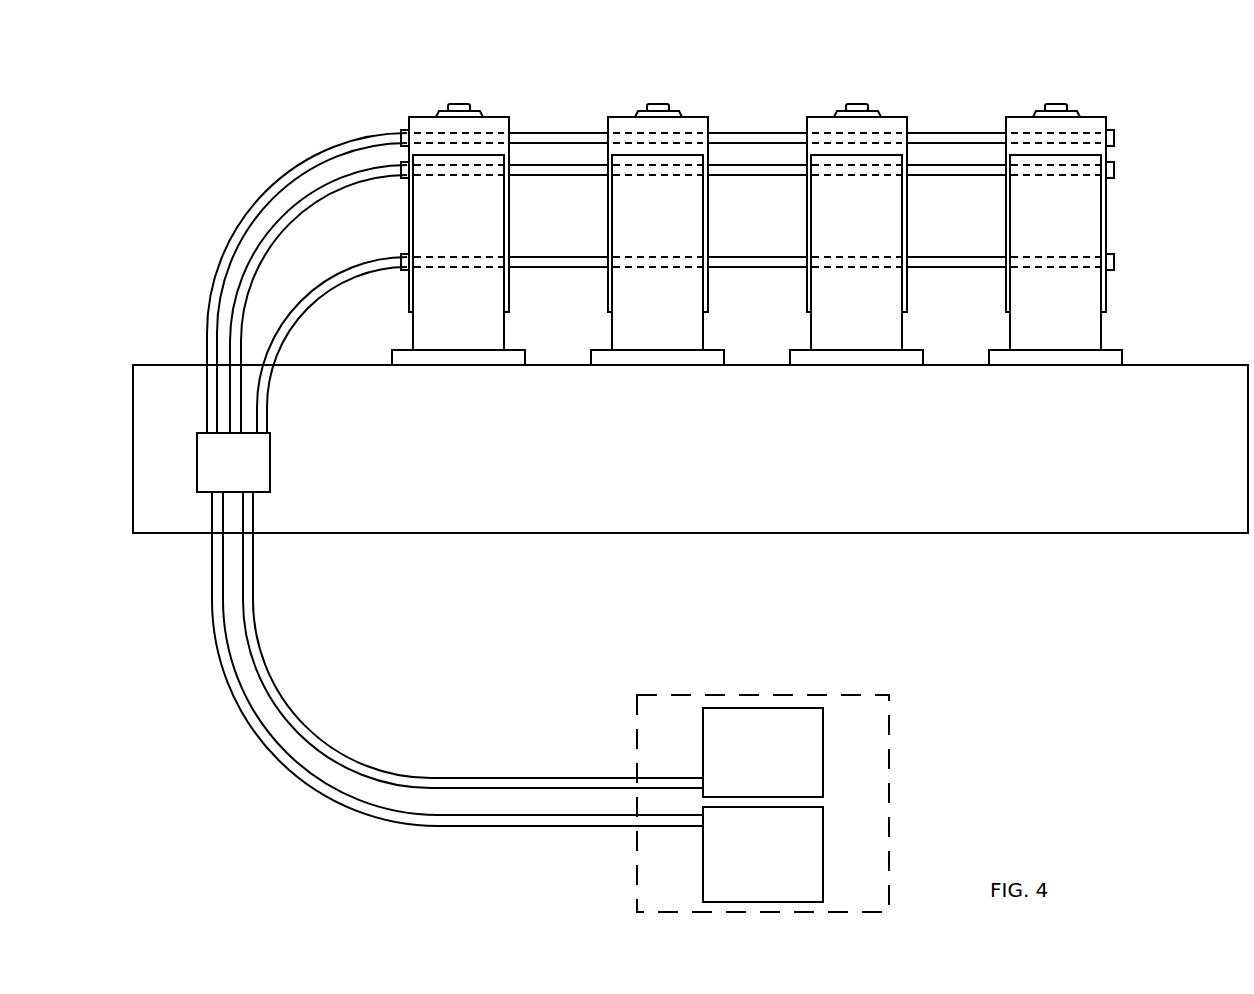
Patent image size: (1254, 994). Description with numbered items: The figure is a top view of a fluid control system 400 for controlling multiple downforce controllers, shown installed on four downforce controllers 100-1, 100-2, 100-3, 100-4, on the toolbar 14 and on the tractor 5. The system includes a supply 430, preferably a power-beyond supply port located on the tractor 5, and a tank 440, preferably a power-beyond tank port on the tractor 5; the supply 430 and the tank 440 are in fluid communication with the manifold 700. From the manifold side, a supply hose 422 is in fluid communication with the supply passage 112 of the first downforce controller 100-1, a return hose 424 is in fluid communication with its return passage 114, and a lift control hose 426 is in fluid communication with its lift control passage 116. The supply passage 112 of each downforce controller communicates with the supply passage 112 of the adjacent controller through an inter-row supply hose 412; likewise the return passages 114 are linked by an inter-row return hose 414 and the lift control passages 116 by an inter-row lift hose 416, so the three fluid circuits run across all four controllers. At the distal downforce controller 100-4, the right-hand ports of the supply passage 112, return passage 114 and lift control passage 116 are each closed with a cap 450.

The first downforce controller 100-1 is at (400, 200).
The downforce controller 100-2 is at (591, 118).
The downforce controller 100-3 is at (790, 118).
The distal downforce controller 100-4 is at (989, 118).
The fluid control system 400 is at (753, 200).
The inter-row supply hose 412 is at (547, 133).
The inter-row return hose 414 is at (606, 173).
The inter-row lift hose 416 is at (517, 270).
The supply hose 422 is at (282, 178).
The return hose 424 is at (326, 197).
The lift control hose 426 is at (387, 271).
The supply passage 112 is at (437, 133).
The return passage 114 is at (447, 175).
The lift control passage 116 is at (437, 257).
The cap 450 is at (1114, 139).
The manifold 700 is at (233, 462).
The toolbar 14 is at (723, 534).
The supply 430 is at (763, 752).
The tank 440 is at (763, 854).
The tractor 5 is at (795, 803).